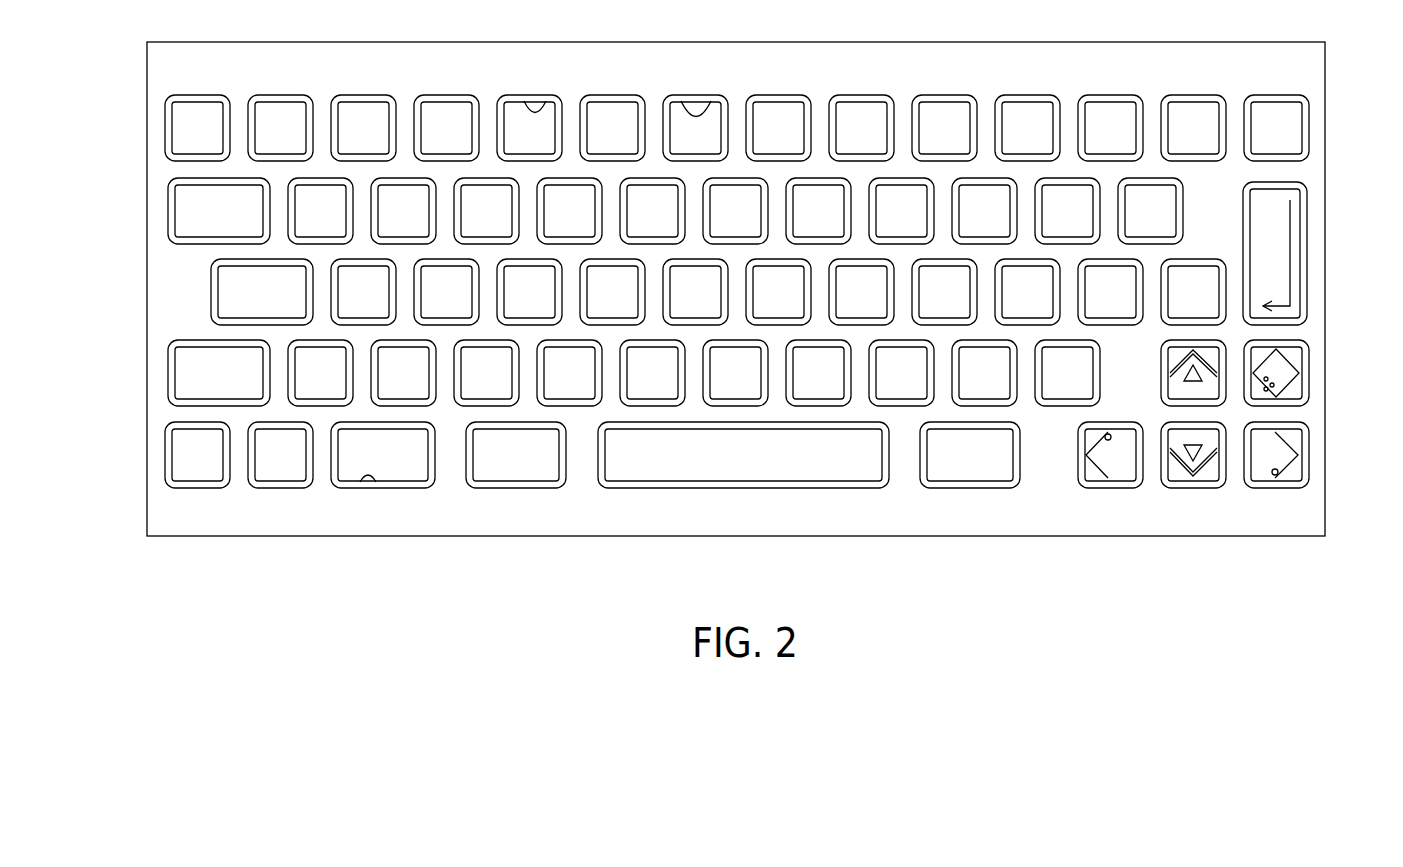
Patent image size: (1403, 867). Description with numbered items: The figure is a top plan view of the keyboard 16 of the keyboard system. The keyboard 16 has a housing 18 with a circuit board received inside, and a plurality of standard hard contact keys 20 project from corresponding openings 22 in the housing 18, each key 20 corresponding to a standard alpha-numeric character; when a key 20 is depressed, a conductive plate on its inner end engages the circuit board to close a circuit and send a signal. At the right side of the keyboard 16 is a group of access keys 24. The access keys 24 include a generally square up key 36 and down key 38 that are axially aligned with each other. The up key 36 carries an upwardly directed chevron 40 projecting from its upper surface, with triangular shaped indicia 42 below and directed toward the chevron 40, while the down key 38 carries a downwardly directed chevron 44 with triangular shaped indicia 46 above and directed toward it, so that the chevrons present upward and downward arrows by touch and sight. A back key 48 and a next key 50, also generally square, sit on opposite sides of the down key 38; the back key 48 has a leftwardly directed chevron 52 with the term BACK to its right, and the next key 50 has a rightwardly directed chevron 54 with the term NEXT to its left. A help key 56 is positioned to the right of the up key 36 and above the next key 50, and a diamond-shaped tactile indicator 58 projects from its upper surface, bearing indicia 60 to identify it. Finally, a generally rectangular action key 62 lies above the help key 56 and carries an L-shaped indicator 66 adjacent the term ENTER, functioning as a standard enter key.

The keyboard 16 is at (537, 570).
The housing 18 is at (621, 541).
The standard hard contact keys 20 is at (861, 96).
The openings 22 is at (548, 100).
The access keys 24 is at (1191, 503).
The up key 36 is at (1163, 338).
The down key 38 is at (1226, 491).
The upwardly directed chevron 40 is at (1180, 362).
The triangular shaped indicia 42 is at (1187, 372).
The downwardly directed chevron 44 is at (1185, 471).
The triangular shaped indicia 46 is at (1180, 456).
The back key 48 is at (1080, 491).
The next key 50 is at (1263, 491).
The leftwardly directed chevron 52 is at (1105, 437).
The rightwardly directed chevron 54 is at (1277, 473).
The help key 56 is at (1250, 342).
The diamond-shaped tactile indicator 58 is at (1290, 391).
The indicia 60 is at (1297, 359).
The action key 62 is at (1242, 179).
The indicator 66 is at (1285, 196).